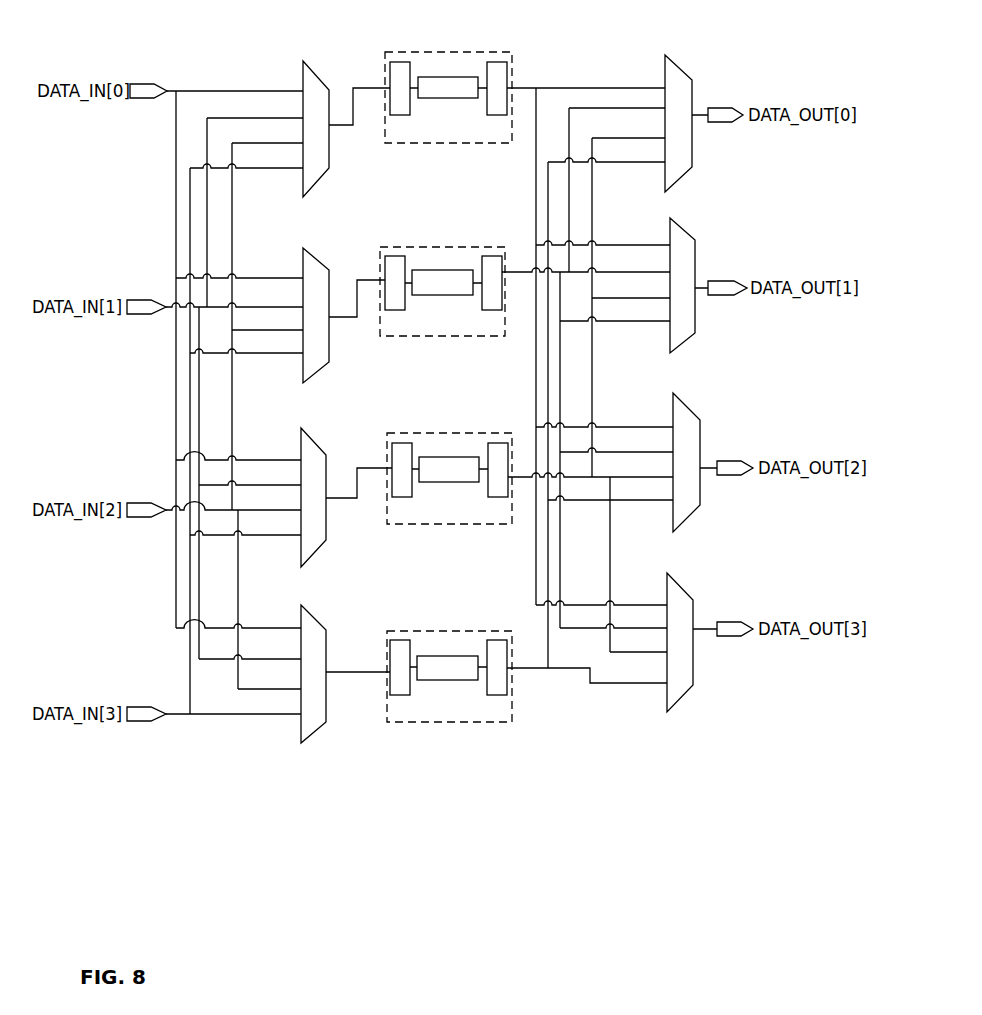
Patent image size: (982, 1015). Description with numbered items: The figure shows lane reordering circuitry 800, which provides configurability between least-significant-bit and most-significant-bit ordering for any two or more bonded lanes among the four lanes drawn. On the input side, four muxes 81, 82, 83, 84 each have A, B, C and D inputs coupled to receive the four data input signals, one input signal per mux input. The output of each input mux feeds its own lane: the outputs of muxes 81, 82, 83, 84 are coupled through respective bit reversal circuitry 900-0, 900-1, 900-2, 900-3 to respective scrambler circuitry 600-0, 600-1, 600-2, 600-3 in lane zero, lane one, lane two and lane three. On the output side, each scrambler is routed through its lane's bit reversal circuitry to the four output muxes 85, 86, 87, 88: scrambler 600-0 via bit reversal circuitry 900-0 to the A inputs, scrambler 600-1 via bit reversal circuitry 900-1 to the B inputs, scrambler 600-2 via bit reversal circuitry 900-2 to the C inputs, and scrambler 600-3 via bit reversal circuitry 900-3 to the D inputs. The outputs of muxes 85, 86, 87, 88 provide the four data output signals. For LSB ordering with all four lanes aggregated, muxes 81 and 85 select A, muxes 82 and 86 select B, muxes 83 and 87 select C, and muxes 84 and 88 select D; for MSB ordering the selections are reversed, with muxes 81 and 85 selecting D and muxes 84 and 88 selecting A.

The mux 81 is at (302, 62).
The mux 82 is at (302, 248).
The mux 83 is at (300, 428).
The mux 84 is at (300, 605).
The mux 85 is at (665, 55).
The mux 86 is at (680, 227).
The mux 87 is at (680, 402).
The mux 88 is at (680, 582).
The bit reversal circuitry 900-0 is at (448, 83).
The bit reversal circuitry 900-1 is at (442, 277).
The bit reversal circuitry 900-2 is at (449, 464).
The bit reversal circuitry 900-3 is at (449, 661).
The scrambler circuitry 600-0 is at (430, 96).
The scrambler circuitry 600-1 is at (424, 291).
The scrambler circuitry 600-2 is at (431, 478).
The scrambler circuitry 600-3 is at (430, 676).
The lane reordering circuitry 800 is at (681, 744).